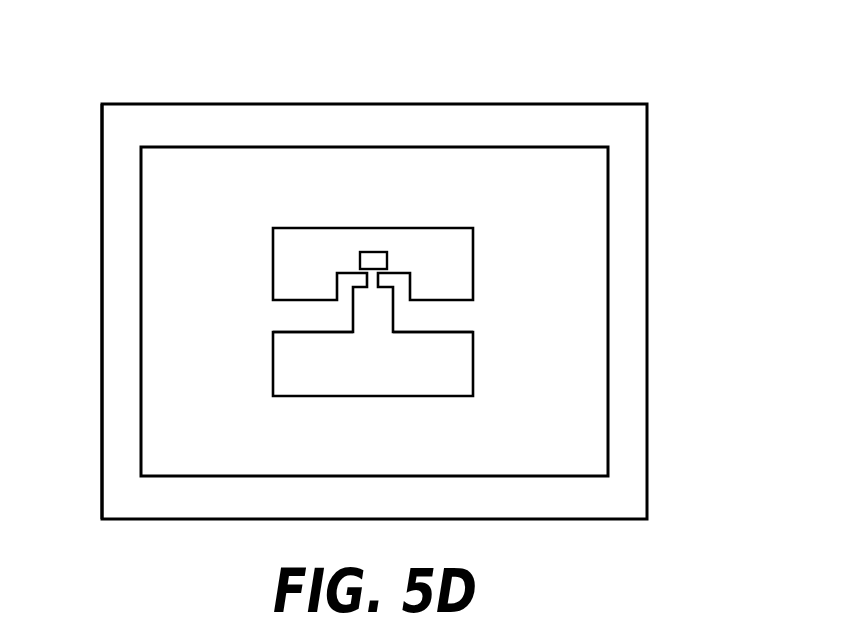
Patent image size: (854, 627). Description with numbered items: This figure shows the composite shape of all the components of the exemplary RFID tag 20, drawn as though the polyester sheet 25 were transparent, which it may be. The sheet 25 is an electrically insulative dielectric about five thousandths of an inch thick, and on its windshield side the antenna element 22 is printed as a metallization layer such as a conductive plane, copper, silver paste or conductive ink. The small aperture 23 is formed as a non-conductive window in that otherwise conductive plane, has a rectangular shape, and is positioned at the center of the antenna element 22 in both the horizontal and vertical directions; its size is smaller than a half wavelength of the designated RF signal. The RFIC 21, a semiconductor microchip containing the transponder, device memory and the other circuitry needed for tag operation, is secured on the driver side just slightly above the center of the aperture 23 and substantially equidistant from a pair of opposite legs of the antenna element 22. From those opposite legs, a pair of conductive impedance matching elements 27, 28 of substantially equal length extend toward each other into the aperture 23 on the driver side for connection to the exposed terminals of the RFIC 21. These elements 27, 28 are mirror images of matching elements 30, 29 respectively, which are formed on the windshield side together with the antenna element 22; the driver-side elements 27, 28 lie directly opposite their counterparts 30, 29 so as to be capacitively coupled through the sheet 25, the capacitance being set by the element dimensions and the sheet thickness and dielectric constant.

The RFID tag 20 is at (666, 149).
The RFIC 21 is at (373, 258).
The antenna element 22 is at (567, 350).
The aperture 23 is at (452, 368).
The polyester sheet 25 is at (100, 292).
The impedance matching circuitry element 27 is at (269, 280).
The impedance matching circuitry element 28 is at (457, 280).
The impedance matching circuitry element 29 is at (433, 313).
The impedance matching circuitry element 30 is at (295, 306).